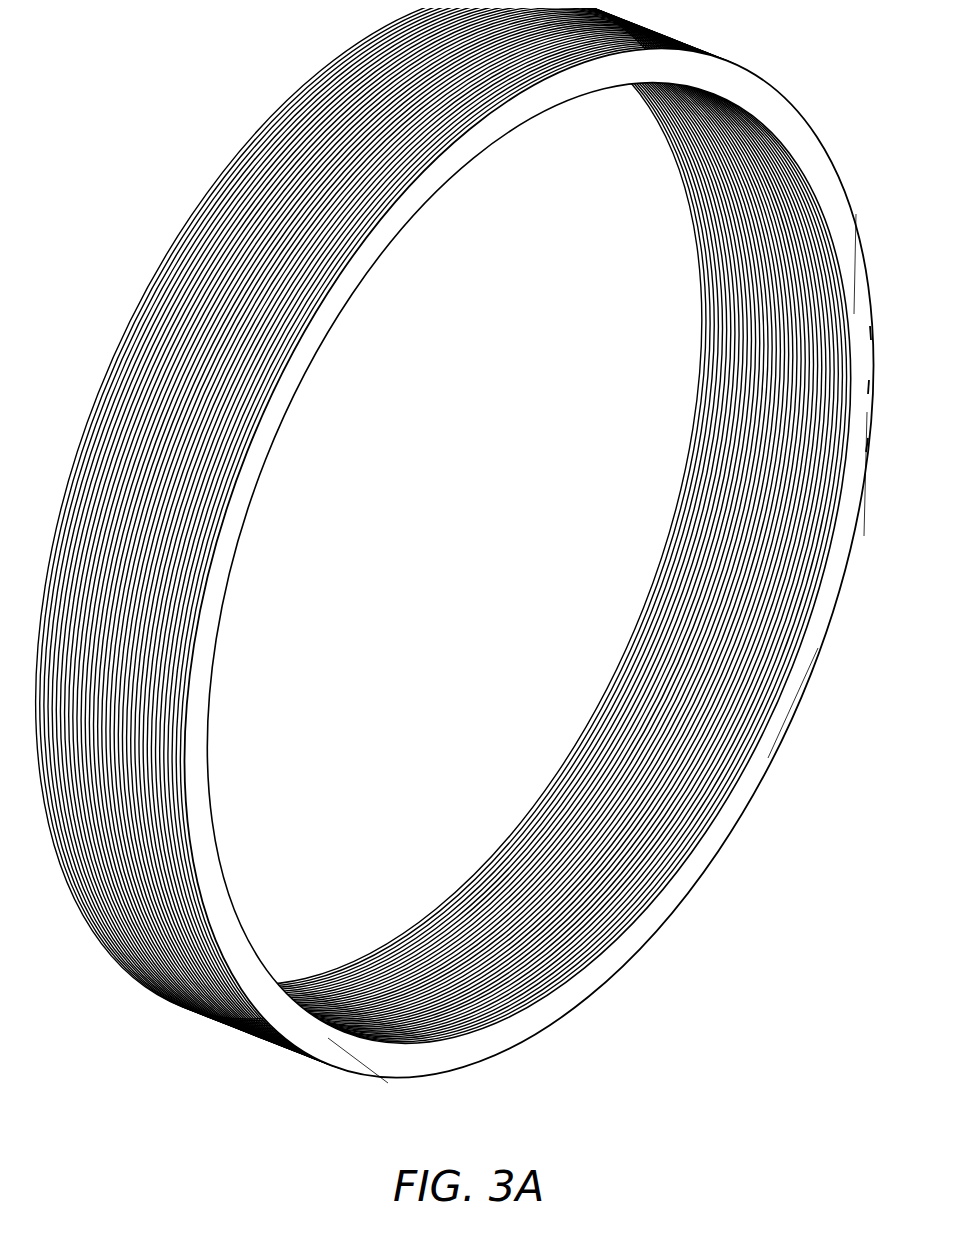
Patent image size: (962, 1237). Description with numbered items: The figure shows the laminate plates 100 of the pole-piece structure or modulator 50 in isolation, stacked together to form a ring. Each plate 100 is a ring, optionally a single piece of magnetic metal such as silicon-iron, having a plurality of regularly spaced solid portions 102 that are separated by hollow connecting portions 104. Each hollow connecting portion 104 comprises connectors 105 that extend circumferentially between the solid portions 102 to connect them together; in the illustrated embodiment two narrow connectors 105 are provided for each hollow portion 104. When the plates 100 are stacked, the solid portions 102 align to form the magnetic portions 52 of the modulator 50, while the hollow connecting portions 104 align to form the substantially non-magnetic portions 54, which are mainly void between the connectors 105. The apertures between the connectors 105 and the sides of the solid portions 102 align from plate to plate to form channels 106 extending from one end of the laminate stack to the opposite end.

The modulator 50 is at (481, 605).
The magnetic portions 52 is at (858, 324).
The substantially non-magnetic portions 54 is at (858, 437).
The laminate plate 100 is at (738, 800).
The solid portions 102 is at (855, 378).
The hollow connecting portions 104 is at (858, 488).
The connectors 105 is at (790, 690).
The channels 106 is at (845, 246).